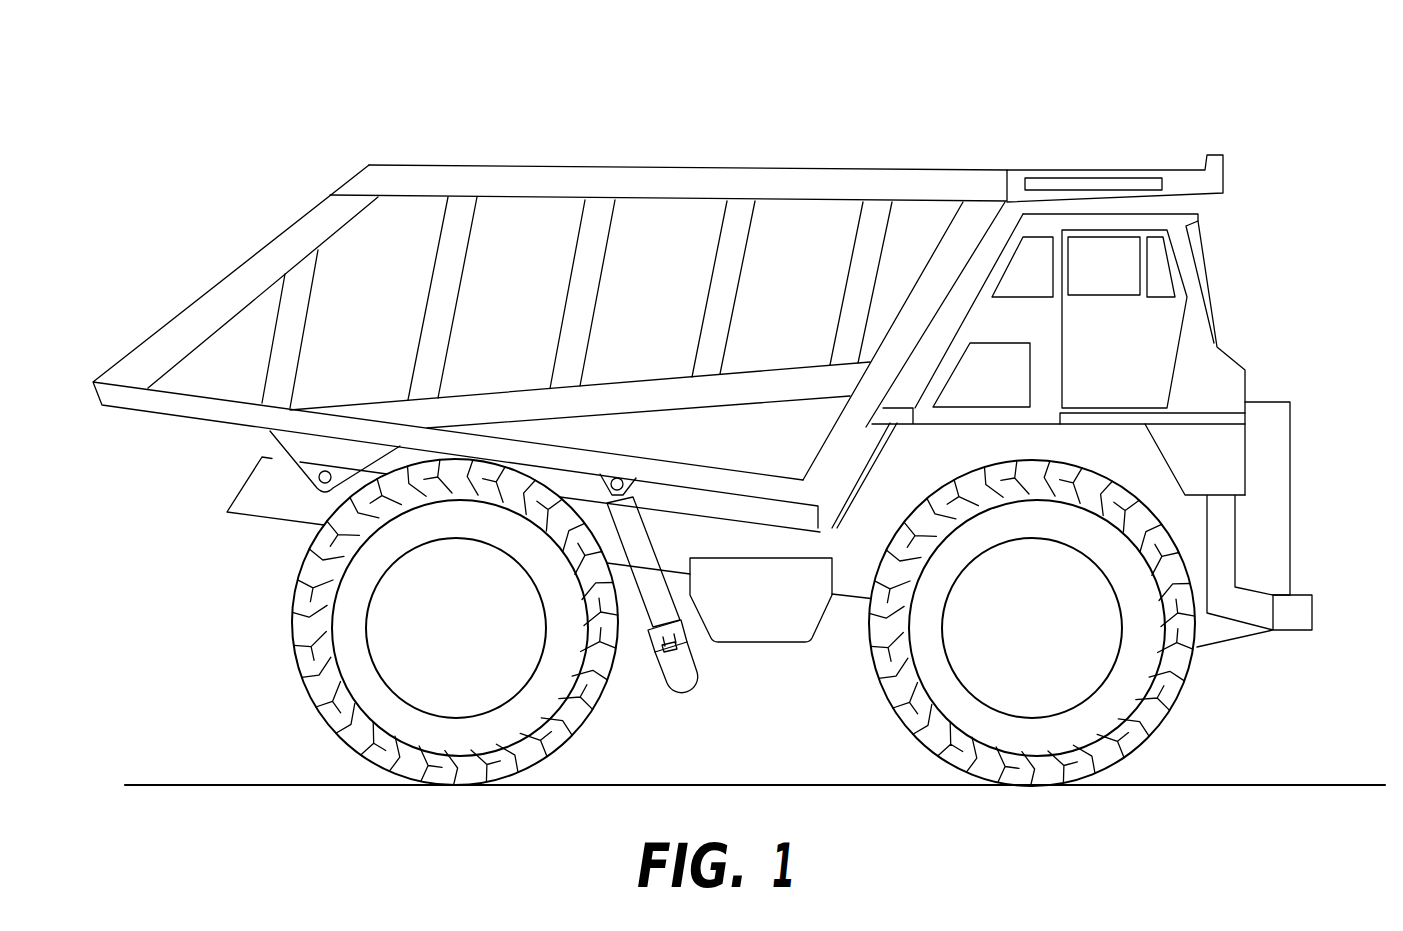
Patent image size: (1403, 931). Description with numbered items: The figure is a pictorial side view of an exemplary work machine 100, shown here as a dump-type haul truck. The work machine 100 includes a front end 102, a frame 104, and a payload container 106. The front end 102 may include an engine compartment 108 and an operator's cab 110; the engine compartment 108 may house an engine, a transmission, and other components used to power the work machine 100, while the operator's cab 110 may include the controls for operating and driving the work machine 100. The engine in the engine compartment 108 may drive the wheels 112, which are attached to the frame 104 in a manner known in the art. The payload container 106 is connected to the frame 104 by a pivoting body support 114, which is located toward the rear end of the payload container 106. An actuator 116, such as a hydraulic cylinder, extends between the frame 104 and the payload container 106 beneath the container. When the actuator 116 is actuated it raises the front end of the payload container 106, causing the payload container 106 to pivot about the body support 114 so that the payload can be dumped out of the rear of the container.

The work machine 100 is at (1282, 69).
The front end 102 is at (1331, 354).
The frame 104 is at (840, 580).
The payload container 106 is at (488, 158).
The engine compartment 108 is at (1293, 419).
The operator's cab 110 is at (1203, 274).
The wheels 112 is at (300, 632).
The body support 114 is at (306, 453).
The actuator 116 is at (660, 604).